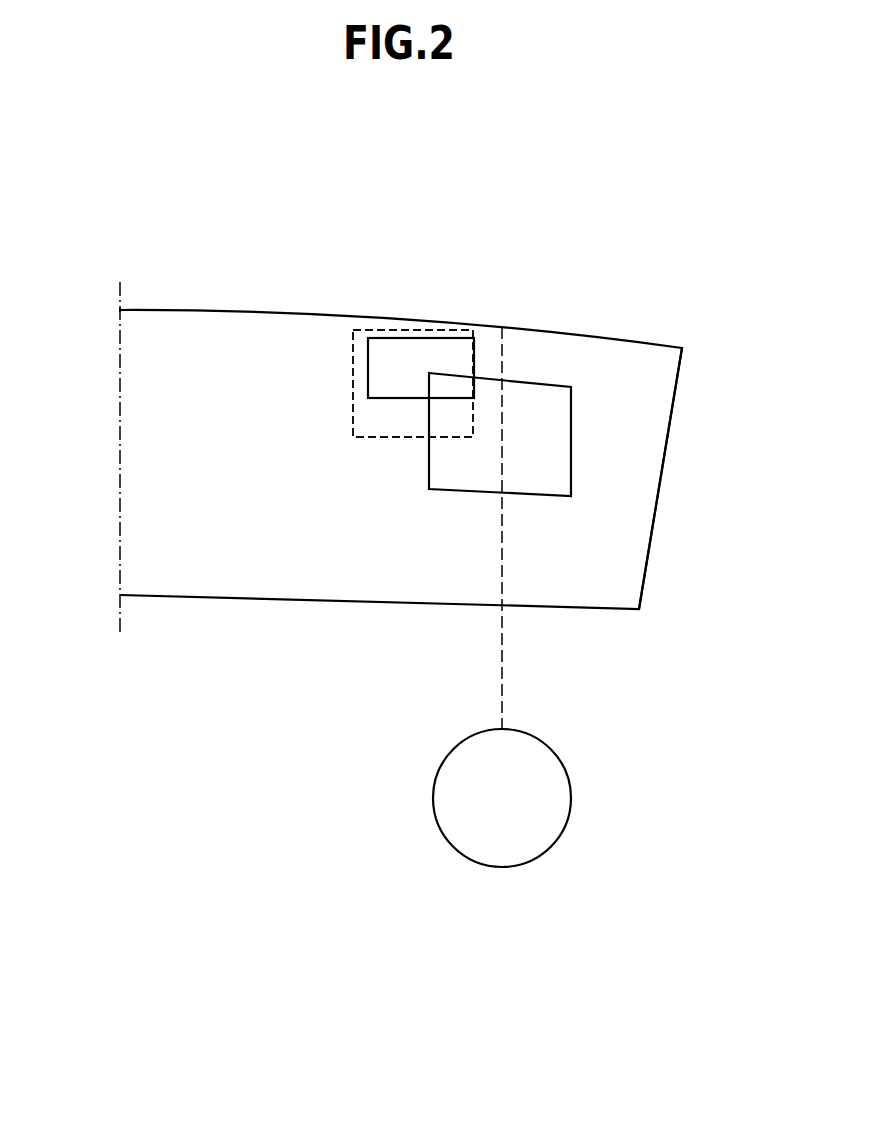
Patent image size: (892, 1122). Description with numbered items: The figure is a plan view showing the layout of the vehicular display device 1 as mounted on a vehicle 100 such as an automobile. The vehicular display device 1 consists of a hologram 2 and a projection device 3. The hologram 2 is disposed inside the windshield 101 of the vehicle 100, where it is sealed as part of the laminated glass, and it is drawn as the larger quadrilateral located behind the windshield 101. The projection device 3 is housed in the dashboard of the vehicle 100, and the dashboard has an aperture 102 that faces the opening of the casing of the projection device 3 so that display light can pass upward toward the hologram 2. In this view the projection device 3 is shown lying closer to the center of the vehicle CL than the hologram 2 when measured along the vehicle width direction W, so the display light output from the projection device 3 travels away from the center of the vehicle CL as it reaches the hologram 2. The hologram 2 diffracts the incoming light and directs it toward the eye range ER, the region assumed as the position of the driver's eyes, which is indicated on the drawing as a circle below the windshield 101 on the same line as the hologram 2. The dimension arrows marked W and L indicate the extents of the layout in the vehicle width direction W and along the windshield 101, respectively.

The vehicular display device 1 is at (475, 210).
The hologram 2 is at (532, 382).
The projection device 3 is at (401, 330).
The vehicle 100 is at (592, 205).
The windshield 101 is at (623, 372).
The aperture 102 is at (369, 362).
The center of the vehicle CL is at (122, 293).
The eye range ER is at (571, 795).
The length L is at (728, 412).
The vehicle width direction W is at (295, 910).